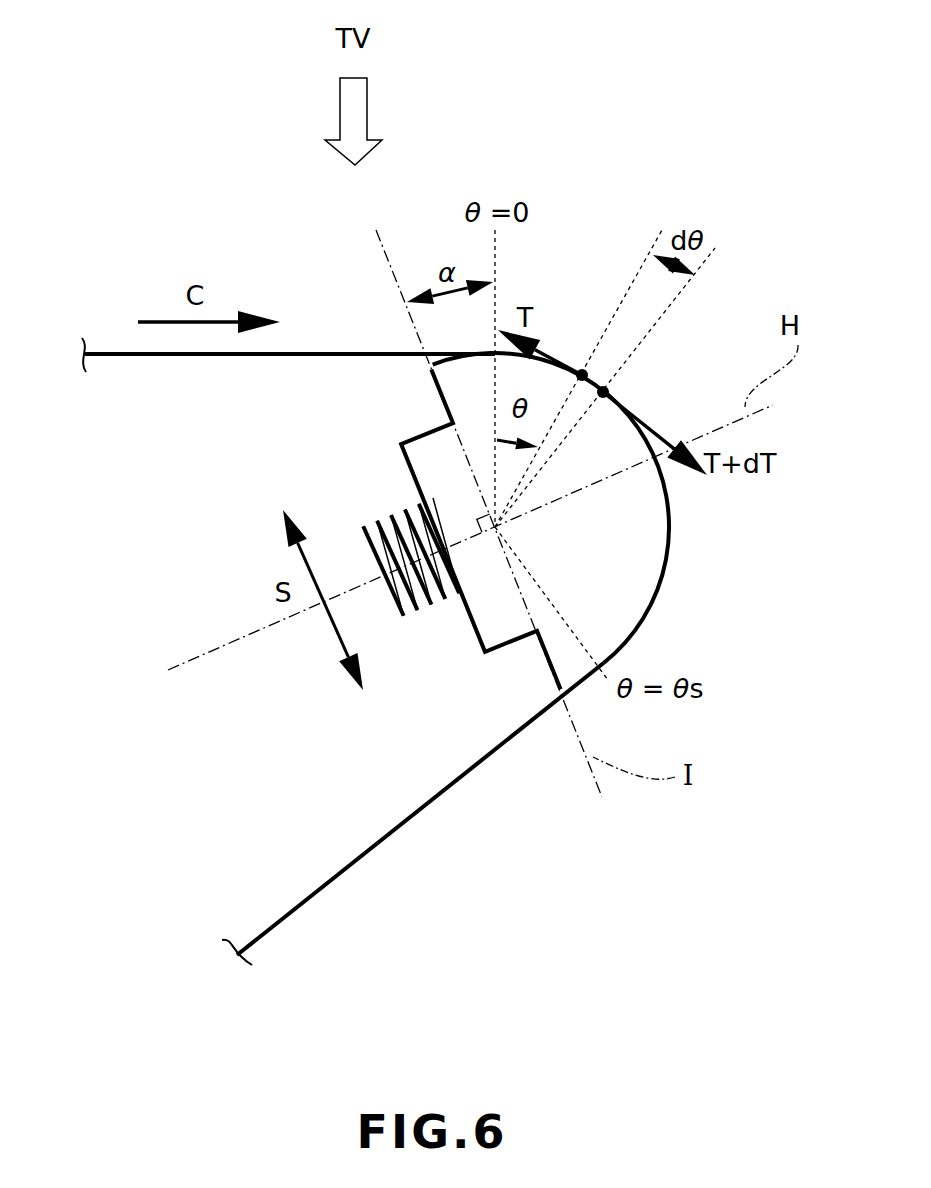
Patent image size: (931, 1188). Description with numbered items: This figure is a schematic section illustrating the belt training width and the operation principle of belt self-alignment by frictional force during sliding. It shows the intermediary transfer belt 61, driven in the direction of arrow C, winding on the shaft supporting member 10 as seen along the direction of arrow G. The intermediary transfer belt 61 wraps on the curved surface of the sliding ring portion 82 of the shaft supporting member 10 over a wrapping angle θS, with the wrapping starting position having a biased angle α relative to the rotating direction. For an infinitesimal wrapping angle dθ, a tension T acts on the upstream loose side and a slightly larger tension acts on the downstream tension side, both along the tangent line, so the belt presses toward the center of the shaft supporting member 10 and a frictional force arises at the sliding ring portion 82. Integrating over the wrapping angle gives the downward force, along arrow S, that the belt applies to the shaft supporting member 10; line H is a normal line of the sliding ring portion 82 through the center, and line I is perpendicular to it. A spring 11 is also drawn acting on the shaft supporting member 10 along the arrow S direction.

The shaft supporting member 10 is at (488, 615).
The spring 11 is at (390, 507).
The intermediary transfer belt 61 is at (420, 807).
The sliding ring portion 82 is at (673, 530).